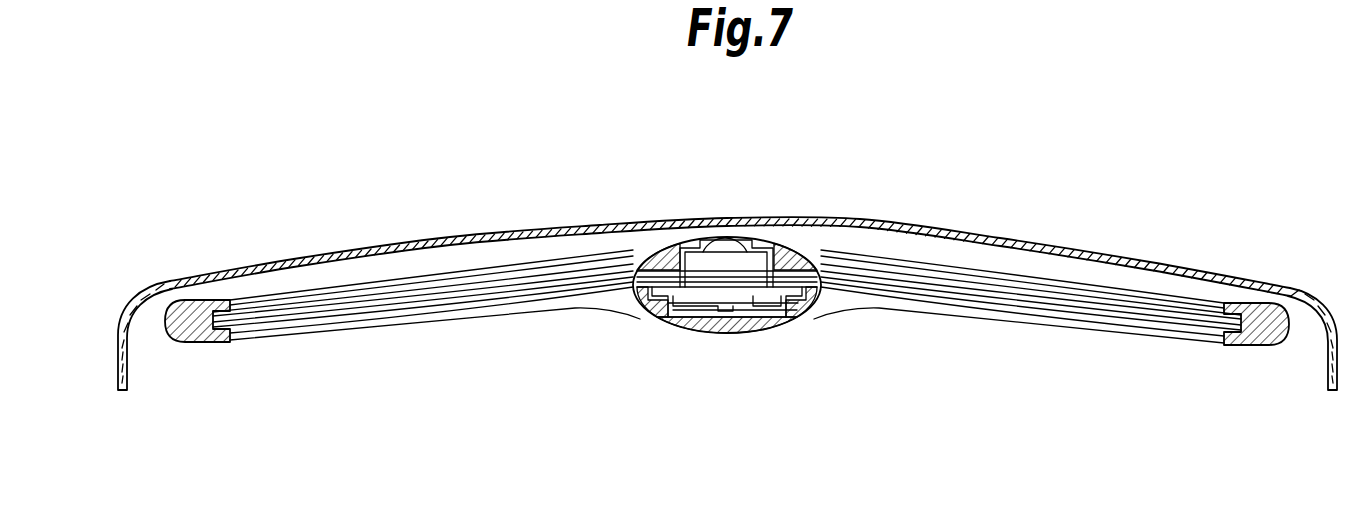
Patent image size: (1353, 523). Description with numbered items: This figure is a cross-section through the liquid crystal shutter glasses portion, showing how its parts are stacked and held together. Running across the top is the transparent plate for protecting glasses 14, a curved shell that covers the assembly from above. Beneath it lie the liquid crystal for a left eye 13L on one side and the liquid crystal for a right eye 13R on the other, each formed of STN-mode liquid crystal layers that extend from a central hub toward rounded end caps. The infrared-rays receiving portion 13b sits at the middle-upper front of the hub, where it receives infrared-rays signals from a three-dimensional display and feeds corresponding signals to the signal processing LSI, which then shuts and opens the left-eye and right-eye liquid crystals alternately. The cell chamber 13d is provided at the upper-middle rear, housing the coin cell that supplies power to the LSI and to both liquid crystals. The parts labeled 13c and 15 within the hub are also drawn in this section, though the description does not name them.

The transparent plate for protecting glasses 14 is at (386, 247).
The liquid crystal for a left eye 13L is at (414, 307).
The liquid crystal for a right eye 13R is at (1050, 313).
The infrared-rays receiving portion 13b is at (732, 238).
The holder 13c is at (755, 280).
The cell chamber 13d is at (670, 332).
The fastening plate 15 is at (730, 310).